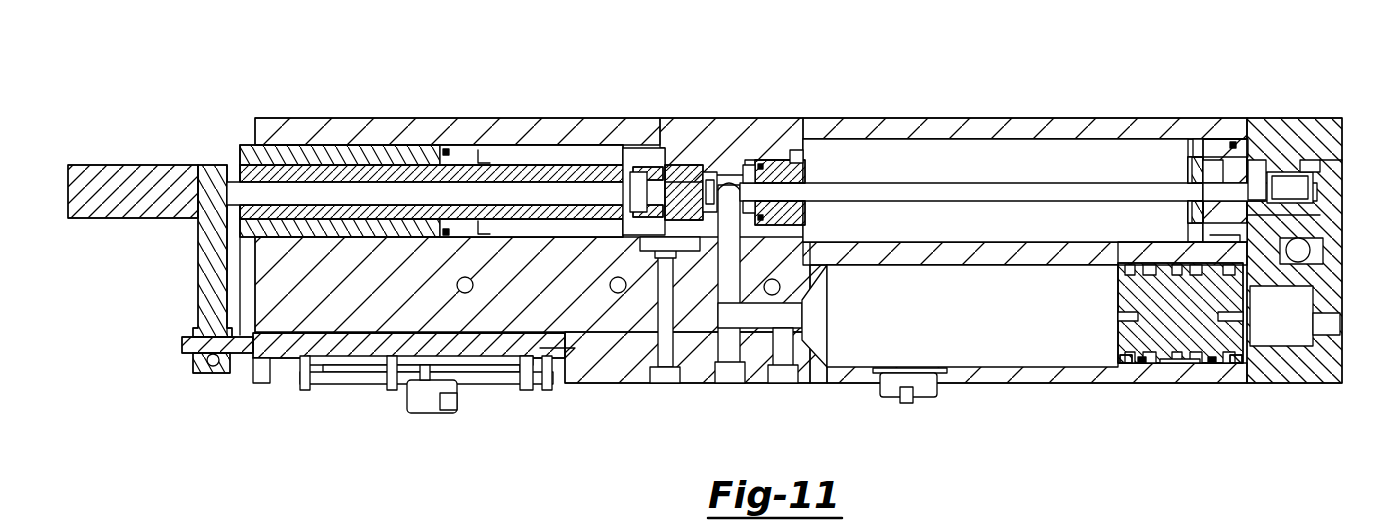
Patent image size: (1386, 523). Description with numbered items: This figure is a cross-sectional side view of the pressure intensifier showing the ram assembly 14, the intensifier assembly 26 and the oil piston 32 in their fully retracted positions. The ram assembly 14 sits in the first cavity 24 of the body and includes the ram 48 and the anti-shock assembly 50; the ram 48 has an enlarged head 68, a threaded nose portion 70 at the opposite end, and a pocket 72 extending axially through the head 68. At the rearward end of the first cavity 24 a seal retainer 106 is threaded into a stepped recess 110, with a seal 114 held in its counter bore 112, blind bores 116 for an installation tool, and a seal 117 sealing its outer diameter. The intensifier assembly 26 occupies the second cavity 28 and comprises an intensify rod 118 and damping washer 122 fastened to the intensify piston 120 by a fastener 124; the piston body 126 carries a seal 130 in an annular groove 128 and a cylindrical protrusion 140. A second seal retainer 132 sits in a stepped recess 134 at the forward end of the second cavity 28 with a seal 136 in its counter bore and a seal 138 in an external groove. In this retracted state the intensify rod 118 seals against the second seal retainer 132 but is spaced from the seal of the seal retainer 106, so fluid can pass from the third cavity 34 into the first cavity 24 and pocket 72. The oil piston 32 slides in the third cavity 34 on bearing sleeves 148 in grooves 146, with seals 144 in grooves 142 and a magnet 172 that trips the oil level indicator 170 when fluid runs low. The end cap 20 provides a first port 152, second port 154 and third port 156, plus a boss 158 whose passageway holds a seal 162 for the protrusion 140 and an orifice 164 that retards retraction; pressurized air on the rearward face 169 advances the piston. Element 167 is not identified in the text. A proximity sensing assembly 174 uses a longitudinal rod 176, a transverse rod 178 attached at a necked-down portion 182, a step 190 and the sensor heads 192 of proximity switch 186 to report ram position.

The ram assembly 14 is at (597, 148).
The end cap 20 is at (1330, 130).
The first cavity 24 is at (545, 150).
The intensifier assembly 26 is at (1012, 175).
The second cavity 28 is at (968, 178).
The oil piston 32 is at (1110, 320).
The third cavity 34 is at (917, 327).
The ram 48 is at (505, 148).
The anti-shock assembly 50 is at (640, 250).
The head 68 is at (640, 160).
The threaded nose portion 70 is at (143, 165).
The pocket 72 is at (382, 186).
The seal retainer 106 is at (693, 165).
The stepped recess 110 is at (712, 205).
The counter bore 112 is at (662, 188).
The seal 114 is at (720, 185).
The blind bores 116 is at (670, 218).
The seal 117 is at (710, 180).
The intensify rod 118 is at (882, 190).
The intensify piston 120 is at (1188, 160).
The damping washer 122 is at (1200, 165).
The fastener 124 is at (1284, 190).
The body 126 is at (1210, 227).
The annular groove 128 is at (1305, 215).
The seal 130 is at (1210, 160).
The second seal retainer 132 is at (800, 160).
The stepped recess 134 is at (762, 200).
The seal 136 is at (750, 185).
The seal 138 is at (798, 212).
The protrusion 140 is at (1300, 180).
The external annular grooves 142 is at (1218, 358).
The seals 144 is at (1120, 363).
The annular grooves 146 is at (1210, 263).
The bearing sleeves 148 is at (1150, 370).
The first port 152 is at (1335, 338).
The second port 154 is at (1330, 168).
The third port 156 is at (1330, 262).
The boss 158 is at (1250, 175).
The seal 162 is at (1188, 205).
The orifice 164 is at (1188, 170).
The seal 167 is at (1180, 243).
The rearward face 169 is at (1325, 190).
The oil level indicator 170 is at (925, 410).
The magnet 172 is at (1190, 370).
The proximity sensing assembly 174 is at (216, 388).
The longitudinal rod 176 is at (278, 358).
The transverse rod 178 is at (205, 265).
The necked-down portion 182 is at (183, 350).
The proximity switch 186 is at (441, 422).
The step 190 is at (540, 350).
The sensor heads 192 is at (520, 370).